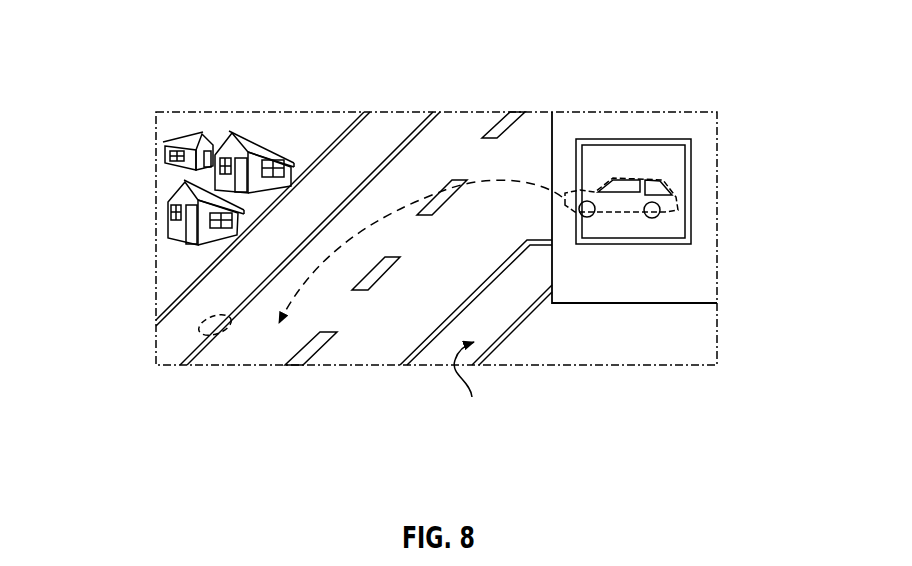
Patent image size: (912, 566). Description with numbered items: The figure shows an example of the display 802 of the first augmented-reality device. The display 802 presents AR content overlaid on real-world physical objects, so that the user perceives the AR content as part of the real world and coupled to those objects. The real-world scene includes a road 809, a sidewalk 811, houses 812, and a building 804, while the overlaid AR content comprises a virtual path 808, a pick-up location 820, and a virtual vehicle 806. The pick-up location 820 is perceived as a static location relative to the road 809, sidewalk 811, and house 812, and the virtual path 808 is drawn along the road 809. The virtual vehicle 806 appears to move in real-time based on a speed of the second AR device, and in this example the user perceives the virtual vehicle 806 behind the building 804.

The display 802 is at (230, 112).
The building 804 is at (700, 282).
The virtual vehicle 806 is at (672, 190).
The virtual path 808 is at (367, 220).
The road 809 is at (462, 153).
The sidewalk 811 is at (173, 337).
The house 812 is at (172, 173).
The pick-up location 820 is at (221, 334).